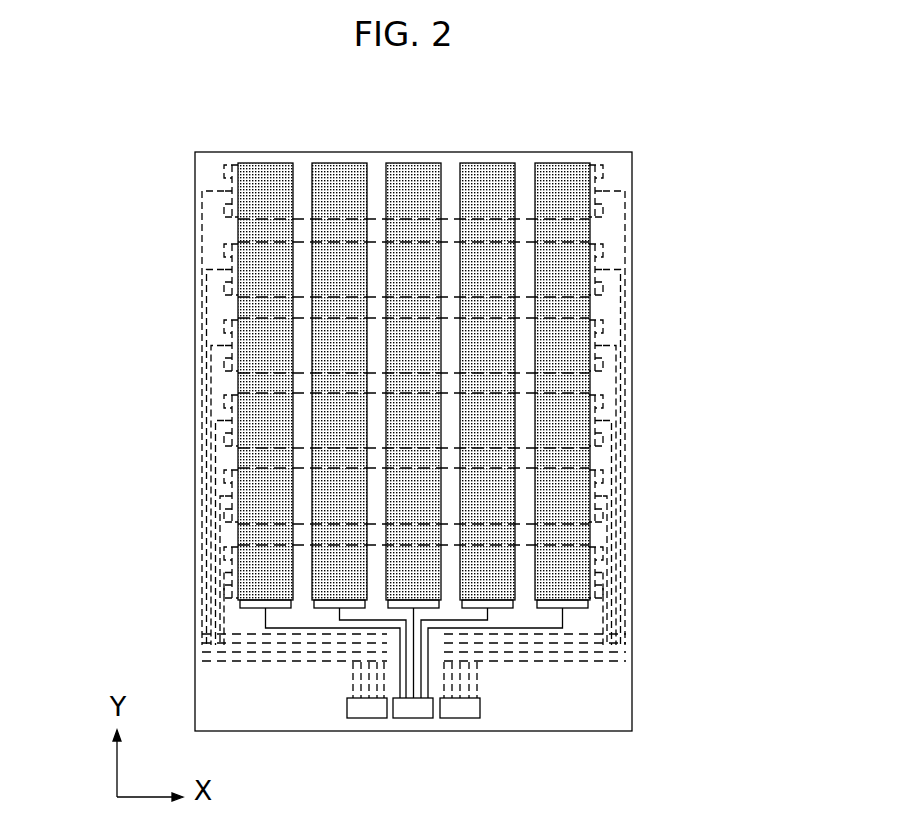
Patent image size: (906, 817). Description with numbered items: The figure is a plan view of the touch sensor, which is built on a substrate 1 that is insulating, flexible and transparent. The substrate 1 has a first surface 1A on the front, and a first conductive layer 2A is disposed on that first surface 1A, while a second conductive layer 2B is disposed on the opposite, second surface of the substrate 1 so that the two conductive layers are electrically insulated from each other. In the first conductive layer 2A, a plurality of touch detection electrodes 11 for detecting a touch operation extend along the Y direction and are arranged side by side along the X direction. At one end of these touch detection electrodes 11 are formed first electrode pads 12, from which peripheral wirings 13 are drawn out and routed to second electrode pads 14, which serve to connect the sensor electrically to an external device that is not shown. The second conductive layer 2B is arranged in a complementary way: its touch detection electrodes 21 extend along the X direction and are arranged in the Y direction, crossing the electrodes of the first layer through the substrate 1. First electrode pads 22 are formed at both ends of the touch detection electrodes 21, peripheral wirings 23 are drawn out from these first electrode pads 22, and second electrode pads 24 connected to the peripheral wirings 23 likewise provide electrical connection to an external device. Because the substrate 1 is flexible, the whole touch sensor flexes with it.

The substrate 1 is at (632, 383).
The first surface 1A is at (612, 701).
The first conductive layer 2A is at (433, 140).
The second conductive layer 2B is at (527, 140).
The touch detection electrodes 11 is at (265, 190).
The first electrode pads 12 is at (258, 608).
The peripheral wirings 13 is at (289, 622).
The second electrode pads 14 is at (413, 710).
The touch detection electrodes 21 is at (376, 190).
The first electrode pads 22 is at (224, 178).
The peripheral wirings 23 is at (202, 250).
The second electrode pads 24 is at (365, 710).